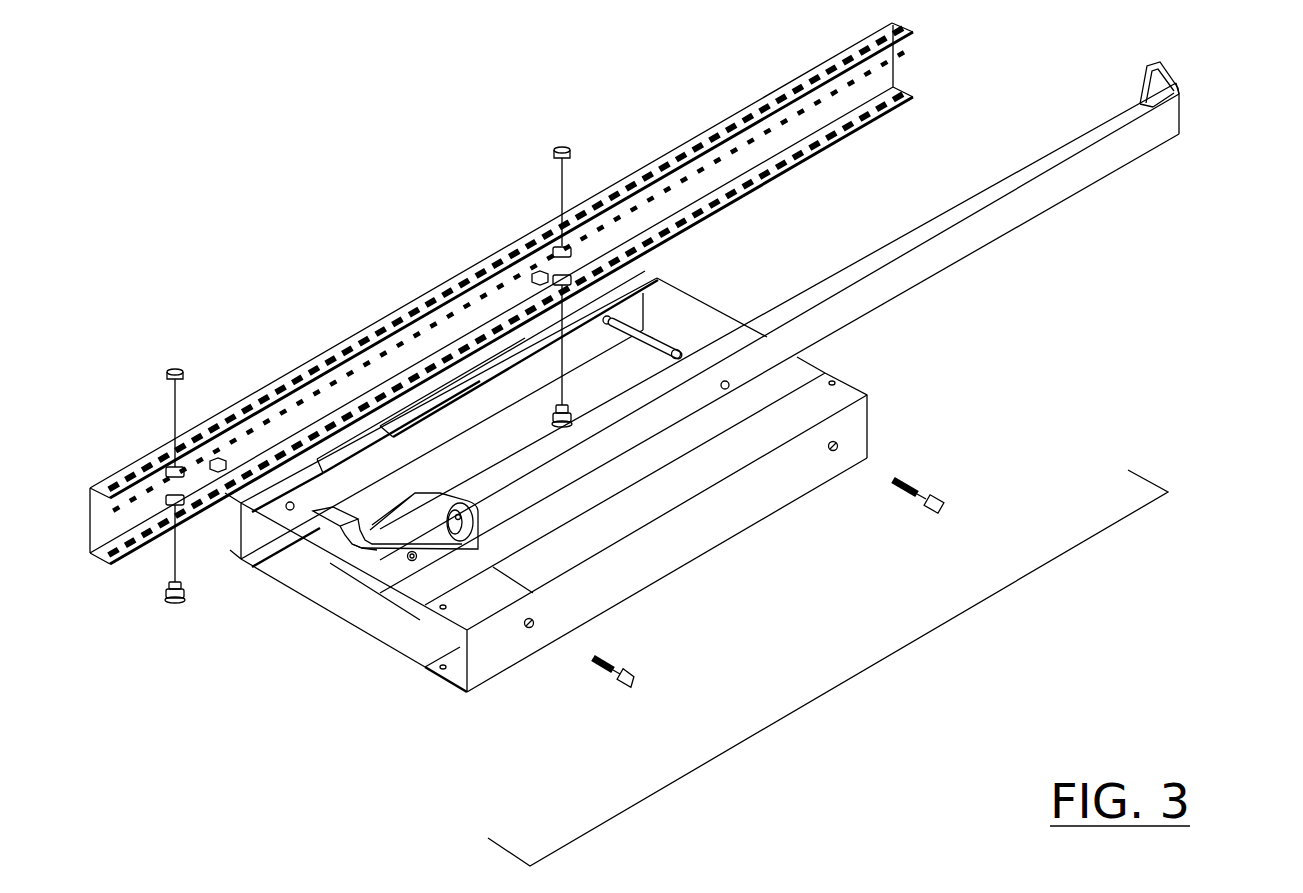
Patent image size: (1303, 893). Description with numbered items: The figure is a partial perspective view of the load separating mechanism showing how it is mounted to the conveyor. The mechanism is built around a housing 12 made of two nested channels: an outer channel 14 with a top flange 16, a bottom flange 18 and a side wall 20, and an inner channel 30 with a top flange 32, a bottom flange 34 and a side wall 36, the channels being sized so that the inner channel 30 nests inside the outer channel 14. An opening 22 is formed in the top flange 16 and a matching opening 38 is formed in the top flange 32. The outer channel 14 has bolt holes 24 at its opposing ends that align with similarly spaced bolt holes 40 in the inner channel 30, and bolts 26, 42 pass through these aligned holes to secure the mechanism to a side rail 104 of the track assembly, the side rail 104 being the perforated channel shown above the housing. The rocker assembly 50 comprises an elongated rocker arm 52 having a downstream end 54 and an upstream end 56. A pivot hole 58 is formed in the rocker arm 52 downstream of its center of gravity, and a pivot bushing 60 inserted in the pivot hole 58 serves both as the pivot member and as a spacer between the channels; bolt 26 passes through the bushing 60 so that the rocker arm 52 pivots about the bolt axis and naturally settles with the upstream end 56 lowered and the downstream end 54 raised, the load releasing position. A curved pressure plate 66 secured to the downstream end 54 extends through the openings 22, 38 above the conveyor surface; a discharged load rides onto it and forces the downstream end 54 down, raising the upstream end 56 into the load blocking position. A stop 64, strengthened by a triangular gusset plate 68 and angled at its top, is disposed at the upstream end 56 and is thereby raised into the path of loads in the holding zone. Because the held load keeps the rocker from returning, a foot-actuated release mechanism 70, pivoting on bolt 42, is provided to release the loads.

The housing 12 is at (855, 680).
The outer channel 14 is at (693, 540).
The top flange 16 is at (840, 397).
The bottom flange 18 is at (457, 677).
The side wall 20 is at (807, 493).
The opening 22 is at (627, 600).
The bolt holes 24 is at (838, 446).
The bolt 26 is at (948, 505).
The inner channel 30 is at (486, 382).
The top flange 32 is at (672, 342).
The bottom flange 34 is at (690, 353).
The side wall 36 is at (242, 555).
The opening 38 is at (345, 460).
The bolt holes 40 is at (290, 510).
The bolt 42 is at (637, 682).
The rocker assembly 50 is at (836, 338).
The rocker arm 52 is at (1080, 180).
The downstream end 54 is at (508, 512).
The upstream end 56 is at (1162, 150).
The pivot hole 58 is at (727, 382).
The pivot bushing 60 is at (610, 319).
The stop 64 is at (1188, 88).
The pressure plate 66 is at (443, 493).
The triangular gusset plate 68 is at (1143, 103).
The release mechanism 70 is at (377, 550).
The side rail 104 is at (682, 145).